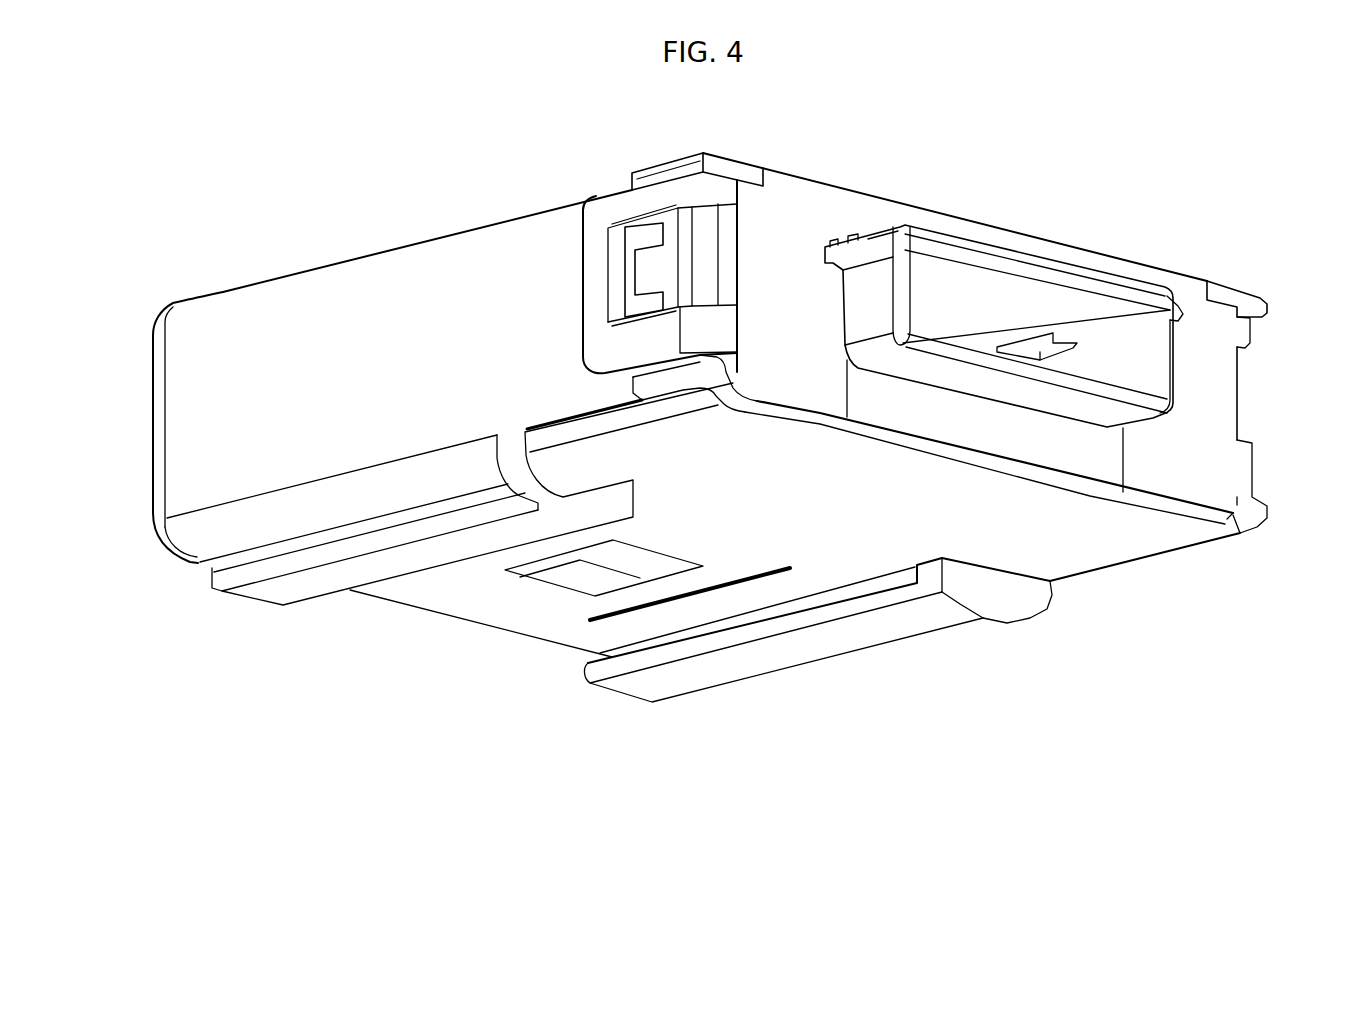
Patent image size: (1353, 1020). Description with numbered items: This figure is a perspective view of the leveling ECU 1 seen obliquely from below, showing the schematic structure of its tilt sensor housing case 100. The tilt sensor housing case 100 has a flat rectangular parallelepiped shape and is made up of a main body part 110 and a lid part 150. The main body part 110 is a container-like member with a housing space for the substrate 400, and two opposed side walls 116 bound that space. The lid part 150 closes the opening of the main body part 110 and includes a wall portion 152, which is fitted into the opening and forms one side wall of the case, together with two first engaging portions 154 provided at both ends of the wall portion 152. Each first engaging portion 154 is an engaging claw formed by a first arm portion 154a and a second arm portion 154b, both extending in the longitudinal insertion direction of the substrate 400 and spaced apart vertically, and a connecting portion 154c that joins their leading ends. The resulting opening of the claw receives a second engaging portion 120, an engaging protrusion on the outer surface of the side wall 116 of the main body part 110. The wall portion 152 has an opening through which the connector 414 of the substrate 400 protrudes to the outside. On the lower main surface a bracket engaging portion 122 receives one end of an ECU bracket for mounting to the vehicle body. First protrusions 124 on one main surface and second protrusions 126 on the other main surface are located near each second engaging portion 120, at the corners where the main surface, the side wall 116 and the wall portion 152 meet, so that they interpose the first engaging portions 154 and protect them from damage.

The leveling ECU 1 is at (725, 818).
The tilt sensor housing case 100 is at (577, 190).
The main body part 110 is at (222, 286).
The side wall 116 is at (193, 472).
The second engaging portion 120 is at (647, 238).
The bracket engaging portion 122 is at (583, 573).
The first protrusion 124 is at (716, 155).
The second protrusion 126 is at (680, 383).
The lid part 150 is at (1044, 231).
The wall portion 152 is at (1167, 472).
The first engaging portion 154 is at (578, 283).
The first arm portion 154a is at (632, 210).
The second arm portion 154b is at (628, 345).
The connecting portion 154c is at (600, 252).
The substrate 400 is at (1120, 287).
The connector 414 is at (1147, 365).